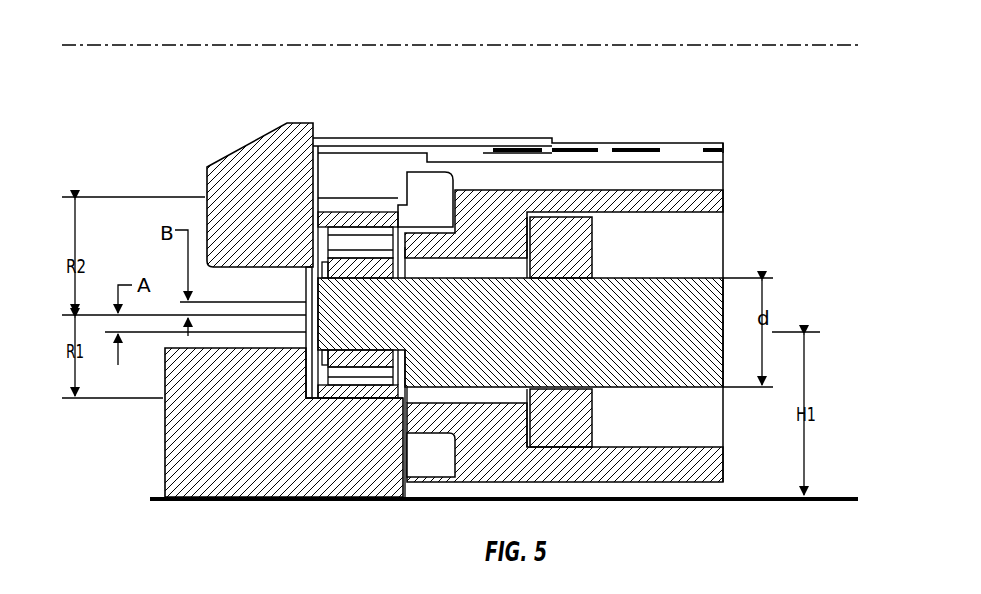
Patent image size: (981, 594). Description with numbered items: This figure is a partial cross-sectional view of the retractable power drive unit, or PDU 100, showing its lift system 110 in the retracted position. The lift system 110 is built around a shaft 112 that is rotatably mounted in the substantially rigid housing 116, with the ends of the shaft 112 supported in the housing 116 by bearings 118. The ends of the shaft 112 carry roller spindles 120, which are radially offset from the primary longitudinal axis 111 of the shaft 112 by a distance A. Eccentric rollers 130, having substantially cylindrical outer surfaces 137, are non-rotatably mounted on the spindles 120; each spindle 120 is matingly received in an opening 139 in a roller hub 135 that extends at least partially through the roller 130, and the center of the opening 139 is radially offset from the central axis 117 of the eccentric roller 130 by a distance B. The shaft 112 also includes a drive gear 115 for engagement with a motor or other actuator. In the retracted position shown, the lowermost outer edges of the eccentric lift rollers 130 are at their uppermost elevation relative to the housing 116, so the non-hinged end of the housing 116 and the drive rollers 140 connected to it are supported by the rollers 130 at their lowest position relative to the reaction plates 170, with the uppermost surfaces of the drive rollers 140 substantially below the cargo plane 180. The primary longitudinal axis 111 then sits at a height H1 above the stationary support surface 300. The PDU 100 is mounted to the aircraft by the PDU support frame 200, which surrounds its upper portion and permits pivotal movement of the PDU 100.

The PDU 100 is at (505, 297).
The lift system 110 is at (778, 276).
The primary longitudinal axis 111 is at (158, 335).
The shaft 112 is at (697, 278).
The drive gear 115 is at (553, 447).
The housing 116 is at (710, 177).
The central axis 117 is at (222, 301).
The bearings 118 is at (485, 398).
The roller spindles 120 is at (372, 392).
The eccentric rollers 130 is at (345, 210).
The roller hubs 135 is at (307, 330).
The outer surfaces 137 is at (373, 198).
The openings 139 is at (347, 392).
The drive rollers 140 is at (543, 137).
The reaction plates 170 is at (165, 425).
The cargo plane 180 is at (702, 47).
The PDU support frame 200 is at (262, 132).
The stationary support surface 300 is at (843, 497).